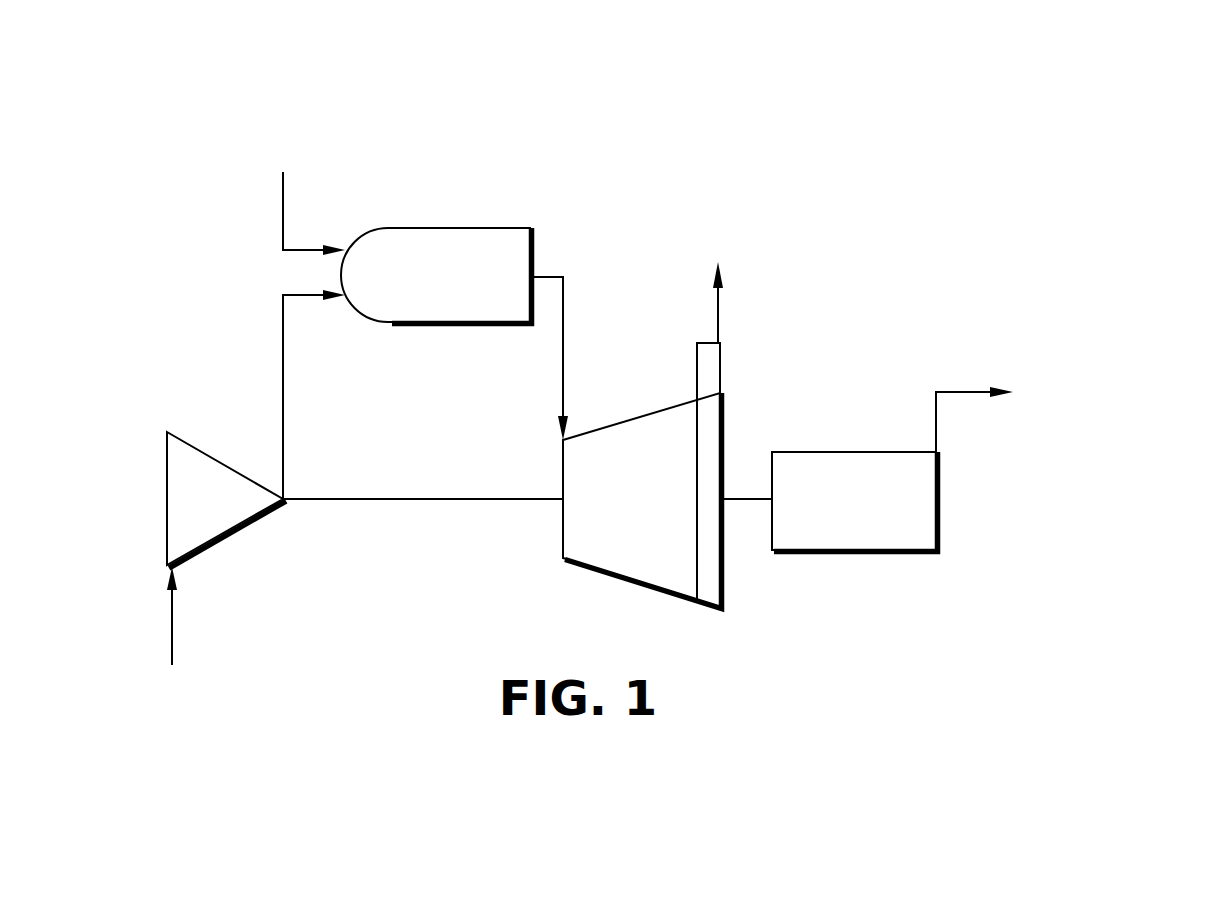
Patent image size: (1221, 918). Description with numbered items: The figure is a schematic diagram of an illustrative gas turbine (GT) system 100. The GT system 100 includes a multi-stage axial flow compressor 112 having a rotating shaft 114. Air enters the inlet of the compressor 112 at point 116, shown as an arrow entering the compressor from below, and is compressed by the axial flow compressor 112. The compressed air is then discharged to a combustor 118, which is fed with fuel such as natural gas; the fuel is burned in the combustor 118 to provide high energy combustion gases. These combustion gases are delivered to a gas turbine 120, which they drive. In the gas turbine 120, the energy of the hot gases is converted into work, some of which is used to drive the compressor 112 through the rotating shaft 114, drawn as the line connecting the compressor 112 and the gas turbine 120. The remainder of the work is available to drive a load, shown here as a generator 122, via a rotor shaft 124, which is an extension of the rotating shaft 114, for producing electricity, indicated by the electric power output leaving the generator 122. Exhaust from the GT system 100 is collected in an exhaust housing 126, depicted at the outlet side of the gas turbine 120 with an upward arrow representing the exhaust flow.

The gas turbine system 100 is at (208, 130).
The multi-stage axial flow compressor 112 is at (192, 498).
The rotating shaft 114 is at (383, 500).
The inlet point 116 is at (172, 643).
The combustor 118 is at (415, 291).
The gas turbine 120 is at (614, 515).
The generator 122 is at (878, 515).
The rotor shaft 124 is at (745, 500).
The exhaust housing 126 is at (718, 367).